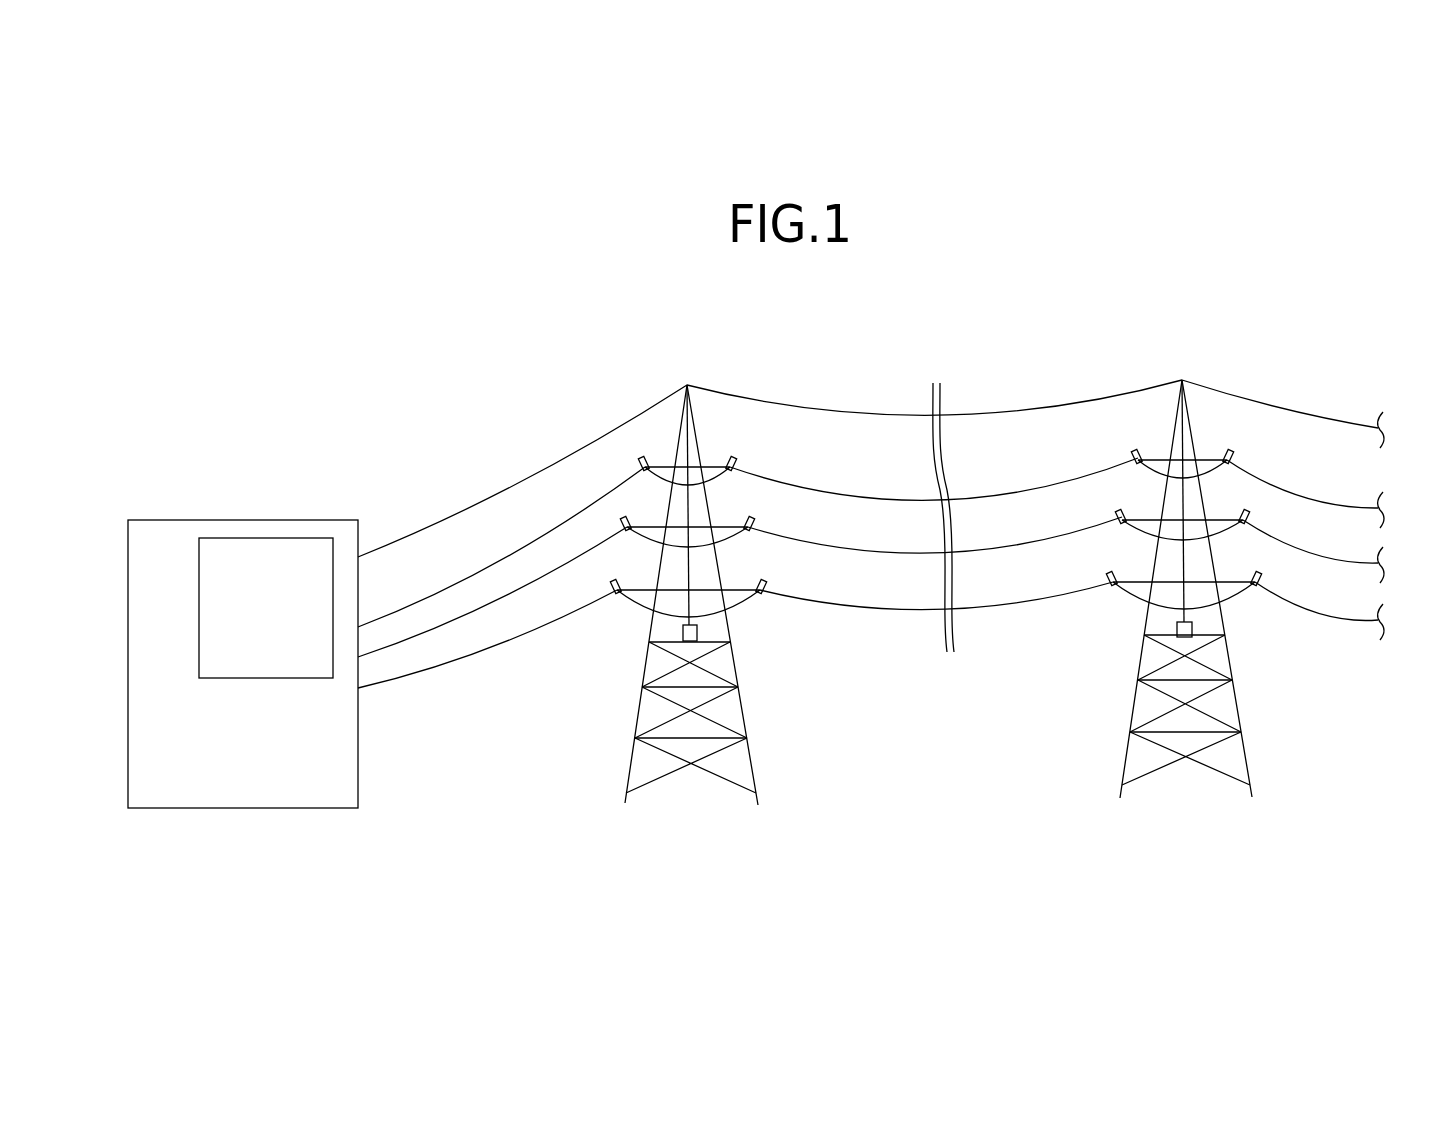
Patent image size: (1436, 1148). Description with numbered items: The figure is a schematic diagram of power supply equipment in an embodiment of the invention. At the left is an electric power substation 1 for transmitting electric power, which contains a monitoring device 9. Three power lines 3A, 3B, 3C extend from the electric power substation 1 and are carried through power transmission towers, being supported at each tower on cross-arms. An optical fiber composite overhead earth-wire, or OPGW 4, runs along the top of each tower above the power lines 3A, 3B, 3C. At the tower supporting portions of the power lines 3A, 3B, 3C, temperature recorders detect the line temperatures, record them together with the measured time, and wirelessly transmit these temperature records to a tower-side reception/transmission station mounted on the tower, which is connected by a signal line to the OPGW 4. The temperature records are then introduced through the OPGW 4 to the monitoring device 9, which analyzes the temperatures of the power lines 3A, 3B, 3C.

The electric power substation 1 is at (183, 520).
The monitoring device 9 is at (266, 538).
The optical fiber composite overhead earth-wire (OPGW) 4 is at (472, 505).
The power line 3A is at (472, 575).
The power line 3B is at (478, 628).
The power line 3C is at (483, 673).